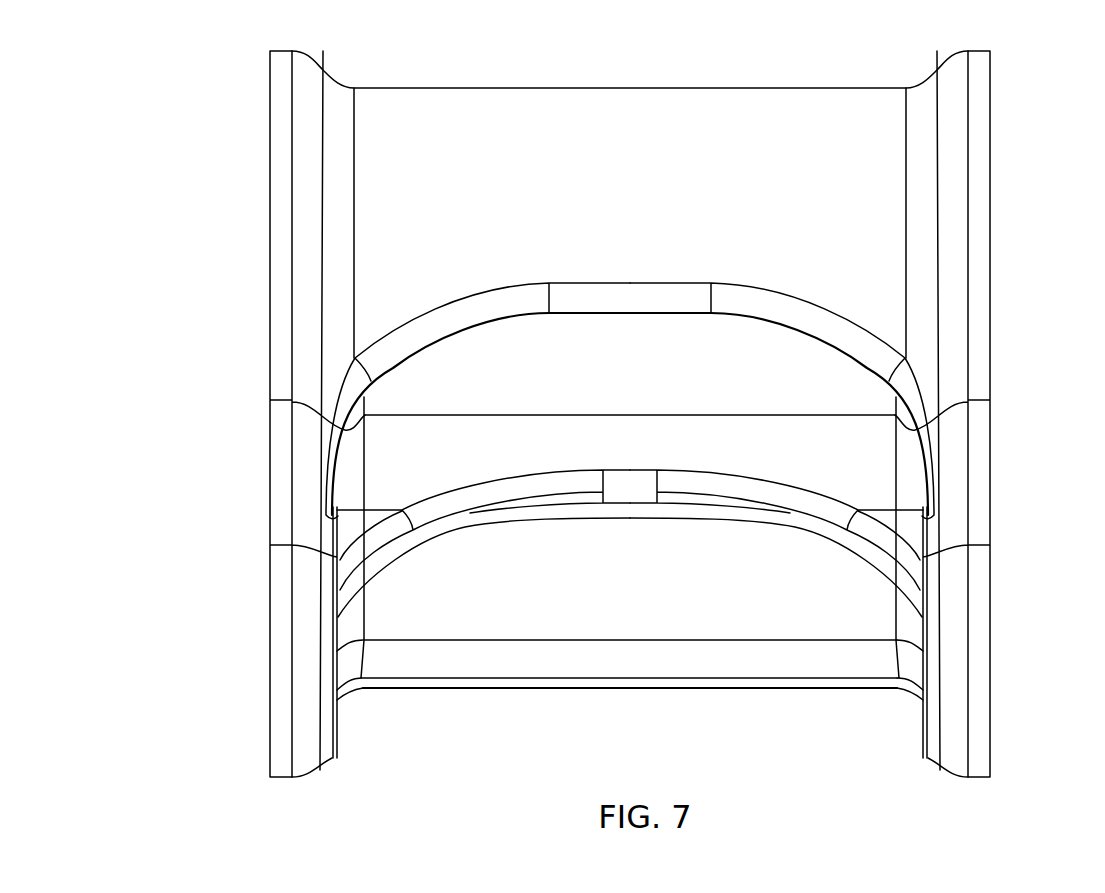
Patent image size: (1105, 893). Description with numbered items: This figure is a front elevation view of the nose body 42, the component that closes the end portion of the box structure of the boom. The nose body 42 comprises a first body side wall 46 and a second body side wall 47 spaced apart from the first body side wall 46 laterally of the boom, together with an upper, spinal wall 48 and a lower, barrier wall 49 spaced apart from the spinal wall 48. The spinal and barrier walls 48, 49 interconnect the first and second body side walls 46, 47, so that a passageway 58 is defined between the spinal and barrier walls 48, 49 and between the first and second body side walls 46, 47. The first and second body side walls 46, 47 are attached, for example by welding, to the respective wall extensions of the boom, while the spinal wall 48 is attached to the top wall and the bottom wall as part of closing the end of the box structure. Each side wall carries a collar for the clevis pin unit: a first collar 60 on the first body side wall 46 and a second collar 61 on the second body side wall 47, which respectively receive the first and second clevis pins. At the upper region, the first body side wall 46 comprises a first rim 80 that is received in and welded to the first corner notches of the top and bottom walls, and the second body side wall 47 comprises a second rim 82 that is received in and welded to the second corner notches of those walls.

The nose body 42 is at (193, 110).
The first body side wall 46 is at (272, 317).
The second body side wall 47 is at (988, 317).
The spinal wall 48 is at (587, 104).
The barrier wall 49 is at (628, 455).
The passageway 58 is at (500, 425).
The first collar 60 is at (333, 730).
The second collar 61 is at (927, 730).
The first rim 80 is at (312, 56).
The second rim 82 is at (950, 57).